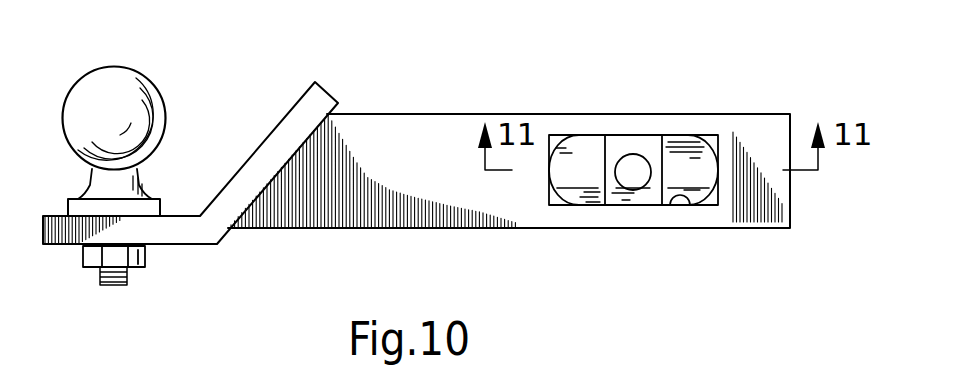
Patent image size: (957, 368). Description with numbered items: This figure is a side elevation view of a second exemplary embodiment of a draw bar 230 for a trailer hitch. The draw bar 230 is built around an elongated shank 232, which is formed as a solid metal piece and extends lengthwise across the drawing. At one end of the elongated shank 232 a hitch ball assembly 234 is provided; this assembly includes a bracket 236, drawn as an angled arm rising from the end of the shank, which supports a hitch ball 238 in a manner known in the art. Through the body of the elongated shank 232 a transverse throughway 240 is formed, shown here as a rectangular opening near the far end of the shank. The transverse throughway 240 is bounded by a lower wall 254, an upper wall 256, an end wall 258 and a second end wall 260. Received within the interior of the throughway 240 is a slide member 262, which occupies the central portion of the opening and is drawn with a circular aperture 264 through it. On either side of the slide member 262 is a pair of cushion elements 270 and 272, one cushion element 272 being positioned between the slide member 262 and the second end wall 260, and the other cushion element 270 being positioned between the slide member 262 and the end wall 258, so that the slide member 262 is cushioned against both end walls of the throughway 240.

The draw bar 230 is at (647, 43).
The elongated shank 232 is at (377, 124).
The hitch ball assembly 234 is at (181, 150).
The bracket 236 is at (212, 226).
The hitch ball 238 is at (136, 64).
The transverse throughway 240 is at (562, 207).
The lower wall 254 is at (692, 206).
The upper wall 256 is at (717, 133).
The end wall 258 is at (708, 206).
The second end wall 260 is at (560, 134).
The slide member 262 is at (618, 204).
The circular aperture 264 is at (640, 155).
The cushion element 270 is at (688, 175).
The cushion element 272 is at (577, 175).